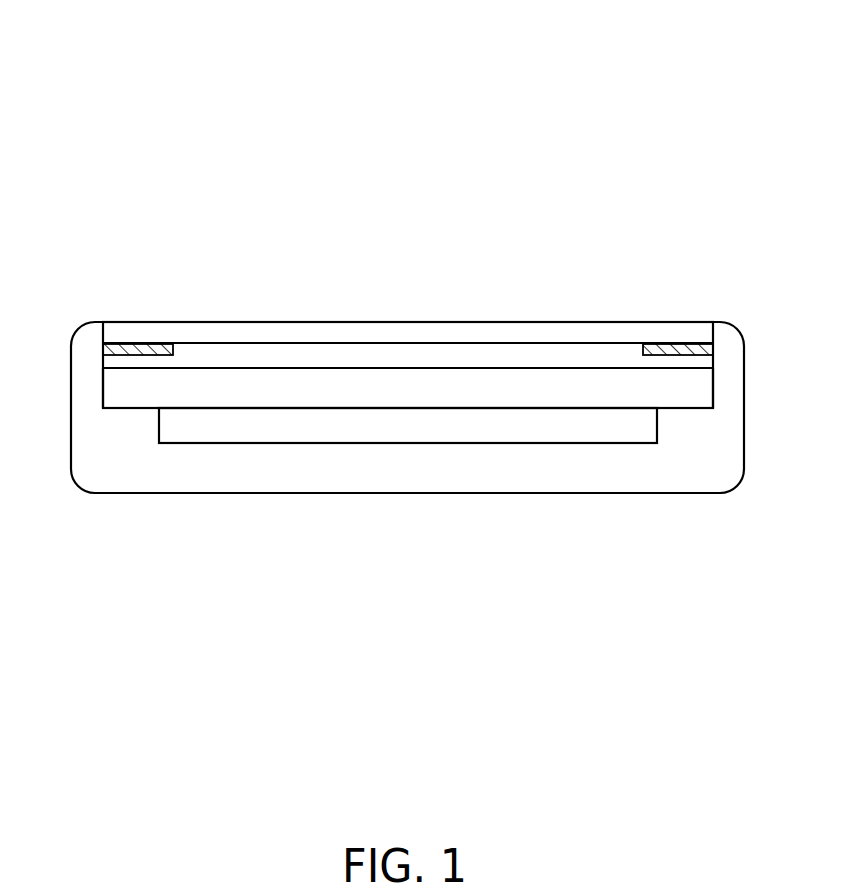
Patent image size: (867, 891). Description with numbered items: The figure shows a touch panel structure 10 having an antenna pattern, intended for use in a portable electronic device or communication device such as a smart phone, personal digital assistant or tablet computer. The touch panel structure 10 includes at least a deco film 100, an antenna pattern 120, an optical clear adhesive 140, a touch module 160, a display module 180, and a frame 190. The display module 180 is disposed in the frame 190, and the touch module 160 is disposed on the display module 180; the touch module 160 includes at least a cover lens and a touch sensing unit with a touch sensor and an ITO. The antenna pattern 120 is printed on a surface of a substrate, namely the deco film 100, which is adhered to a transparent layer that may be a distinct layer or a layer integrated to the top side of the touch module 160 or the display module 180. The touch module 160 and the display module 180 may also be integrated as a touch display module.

The touch panel structure 10 is at (635, 93).
The deco film 100 is at (400, 328).
The antenna pattern 120 is at (710, 351).
The optical clear adhesive 140 is at (473, 355).
The touch module 160 is at (687, 398).
The display module 180 is at (482, 423).
The frame 190 is at (634, 470).